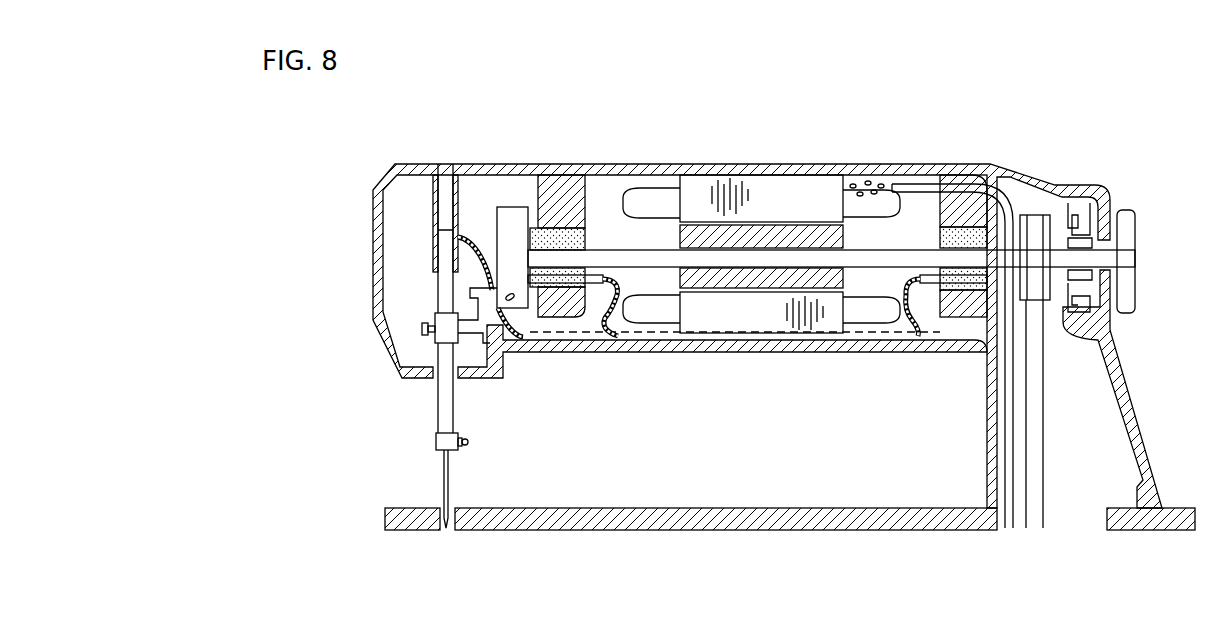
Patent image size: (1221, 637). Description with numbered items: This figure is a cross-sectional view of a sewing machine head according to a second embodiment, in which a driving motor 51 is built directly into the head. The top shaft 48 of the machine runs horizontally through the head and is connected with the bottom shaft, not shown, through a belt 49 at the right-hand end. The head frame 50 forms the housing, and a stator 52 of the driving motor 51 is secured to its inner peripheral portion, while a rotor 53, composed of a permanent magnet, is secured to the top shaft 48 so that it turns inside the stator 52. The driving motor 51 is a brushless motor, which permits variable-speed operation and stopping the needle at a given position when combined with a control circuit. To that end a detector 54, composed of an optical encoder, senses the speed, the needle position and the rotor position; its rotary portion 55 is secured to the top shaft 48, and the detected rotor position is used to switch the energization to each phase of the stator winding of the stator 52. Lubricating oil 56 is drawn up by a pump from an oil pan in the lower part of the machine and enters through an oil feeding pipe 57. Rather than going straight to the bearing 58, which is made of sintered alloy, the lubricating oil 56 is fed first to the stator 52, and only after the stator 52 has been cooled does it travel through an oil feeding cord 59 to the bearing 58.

The top shaft 48 is at (650, 258).
The belt 49 is at (1035, 406).
The head frame 50 is at (912, 172).
The driving motor 51 is at (803, 232).
The stator 52 is at (760, 190).
The rotor 53 is at (728, 233).
The detector 54 is at (1087, 212).
The rotary portion 55 is at (1082, 248).
The lubricating oil 56 is at (865, 185).
The oil feeding pipe 57 is at (960, 190).
The bearing 58 is at (568, 228).
The oil feeding cord 59 is at (518, 347).